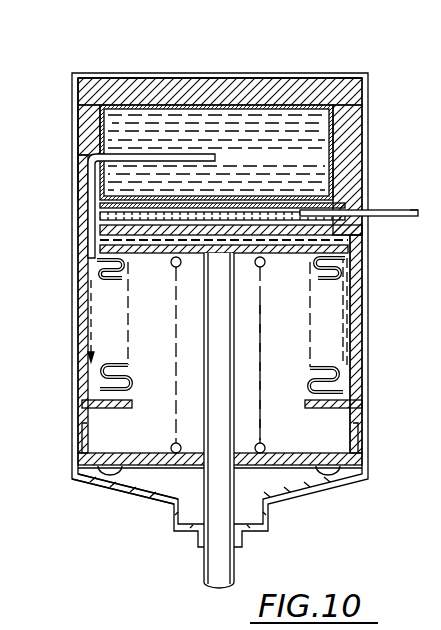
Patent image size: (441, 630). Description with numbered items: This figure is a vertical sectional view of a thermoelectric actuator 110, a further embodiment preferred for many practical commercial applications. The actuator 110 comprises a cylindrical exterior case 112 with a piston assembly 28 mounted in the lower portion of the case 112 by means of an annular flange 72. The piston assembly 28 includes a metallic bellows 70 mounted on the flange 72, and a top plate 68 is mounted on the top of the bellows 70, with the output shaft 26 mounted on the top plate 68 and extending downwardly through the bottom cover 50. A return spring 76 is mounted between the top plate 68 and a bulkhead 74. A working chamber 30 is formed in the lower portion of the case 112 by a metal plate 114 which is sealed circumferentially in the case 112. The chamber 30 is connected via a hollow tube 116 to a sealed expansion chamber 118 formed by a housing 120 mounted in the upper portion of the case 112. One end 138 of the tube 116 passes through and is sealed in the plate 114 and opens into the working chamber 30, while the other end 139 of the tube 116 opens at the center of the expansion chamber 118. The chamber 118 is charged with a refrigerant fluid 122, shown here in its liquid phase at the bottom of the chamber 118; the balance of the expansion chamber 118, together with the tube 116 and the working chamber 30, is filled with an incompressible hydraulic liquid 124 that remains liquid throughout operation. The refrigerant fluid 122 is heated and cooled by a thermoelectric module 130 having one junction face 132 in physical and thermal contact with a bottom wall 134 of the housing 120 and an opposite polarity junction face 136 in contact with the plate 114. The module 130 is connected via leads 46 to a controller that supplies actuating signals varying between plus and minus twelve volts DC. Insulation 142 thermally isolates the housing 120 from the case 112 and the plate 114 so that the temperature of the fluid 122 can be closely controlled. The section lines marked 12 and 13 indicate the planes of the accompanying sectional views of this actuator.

The thermoelectric actuator 110 is at (258, 13).
The exterior case 112 is at (72, 88).
The metal plate 114 is at (349, 249).
The hollow tube 116 is at (87, 262).
The expansion chamber 118 is at (317, 100).
The housing 120 is at (168, 100).
The refrigerant fluid 122 is at (256, 182).
The hydraulic liquid 124 is at (278, 113).
The thermoelectric module 130 is at (120, 230).
The junction face 132 is at (346, 211).
The bottom wall 134 is at (112, 206).
The opposite polarity junction face 136 is at (110, 243).
The end of tube 138 is at (85, 300).
The other end of tube 139 is at (234, 147).
The insulation 142 is at (82, 118).
The leads 46 is at (416, 218).
The working chamber 30 is at (350, 292).
The piston assembly 28 is at (354, 320).
The top plate 68 is at (128, 300).
The metallic bellows 70 is at (133, 335).
The annular flange 72 is at (113, 412).
The bulkhead 74 is at (300, 463).
The return spring 76 is at (263, 362).
The bottom cover 50 is at (160, 505).
The output shaft 26 is at (204, 568).
The section line 12- 12 is at (52, 150).
The section line 13- 13 is at (52, 368).